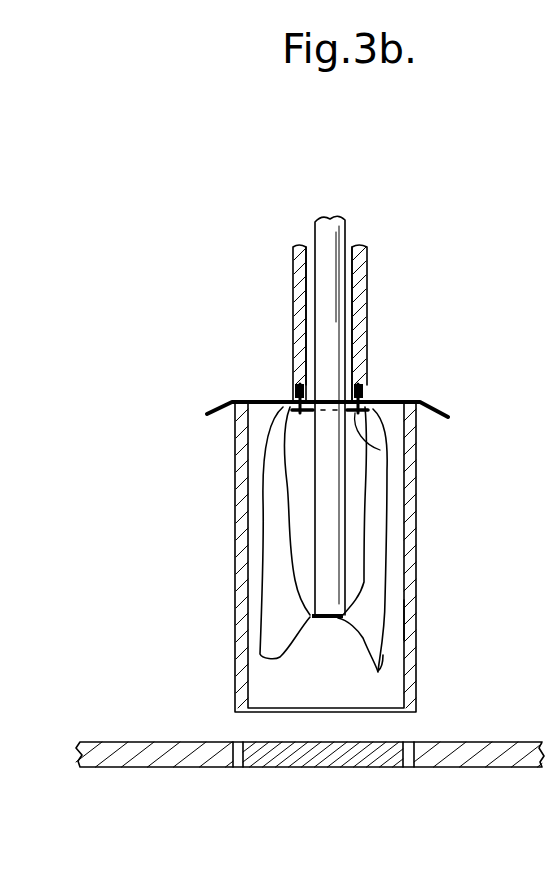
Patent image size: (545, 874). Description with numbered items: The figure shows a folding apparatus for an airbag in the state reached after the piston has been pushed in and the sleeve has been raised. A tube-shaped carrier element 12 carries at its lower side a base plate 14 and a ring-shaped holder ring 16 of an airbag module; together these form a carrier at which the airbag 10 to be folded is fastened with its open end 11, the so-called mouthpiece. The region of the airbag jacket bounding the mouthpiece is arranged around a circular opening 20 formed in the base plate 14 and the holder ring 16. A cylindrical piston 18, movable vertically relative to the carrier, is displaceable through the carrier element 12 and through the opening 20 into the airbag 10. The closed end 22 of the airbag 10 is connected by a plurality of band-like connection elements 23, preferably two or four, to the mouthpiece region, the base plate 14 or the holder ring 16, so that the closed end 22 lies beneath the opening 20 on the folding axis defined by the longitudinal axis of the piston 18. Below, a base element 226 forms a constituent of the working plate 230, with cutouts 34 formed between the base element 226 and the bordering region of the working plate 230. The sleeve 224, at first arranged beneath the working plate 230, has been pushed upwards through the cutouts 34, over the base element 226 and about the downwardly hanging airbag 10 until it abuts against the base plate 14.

The airbag 10 is at (387, 555).
The open end 11 is at (297, 400).
The carrier element 12 is at (367, 281).
The base plate 14 is at (437, 410).
The holder ring 16 is at (367, 407).
The piston 18 is at (330, 238).
The opening 20 is at (322, 422).
The closed end 22 is at (323, 621).
The connection elements 23 is at (283, 512).
The cutouts 34 is at (238, 770).
The sleeve 224 is at (417, 615).
The base element 226 is at (313, 770).
The working plate 230 is at (492, 758).